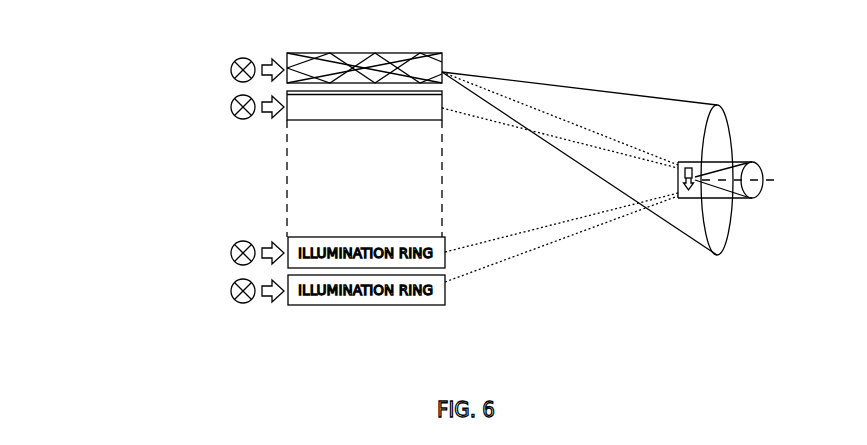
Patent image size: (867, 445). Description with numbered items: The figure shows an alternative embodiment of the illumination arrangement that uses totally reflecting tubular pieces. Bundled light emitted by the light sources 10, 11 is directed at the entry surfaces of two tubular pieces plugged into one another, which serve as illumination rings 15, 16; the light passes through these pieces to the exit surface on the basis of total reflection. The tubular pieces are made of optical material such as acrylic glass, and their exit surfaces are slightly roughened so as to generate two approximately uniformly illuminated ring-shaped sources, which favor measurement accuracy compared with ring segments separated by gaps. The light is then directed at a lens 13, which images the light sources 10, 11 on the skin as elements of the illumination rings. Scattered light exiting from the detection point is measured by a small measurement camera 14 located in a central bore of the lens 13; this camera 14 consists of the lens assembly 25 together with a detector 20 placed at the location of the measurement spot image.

The light source 10 is at (226, 107).
The light source 11 is at (226, 70).
The lens 13 is at (714, 237).
The measurement camera 14 is at (688, 154).
The illumination ring 15 is at (451, 128).
The illumination ring 16 is at (445, 50).
The detector 20 is at (680, 178).
The lens assembly 25 is at (754, 203).